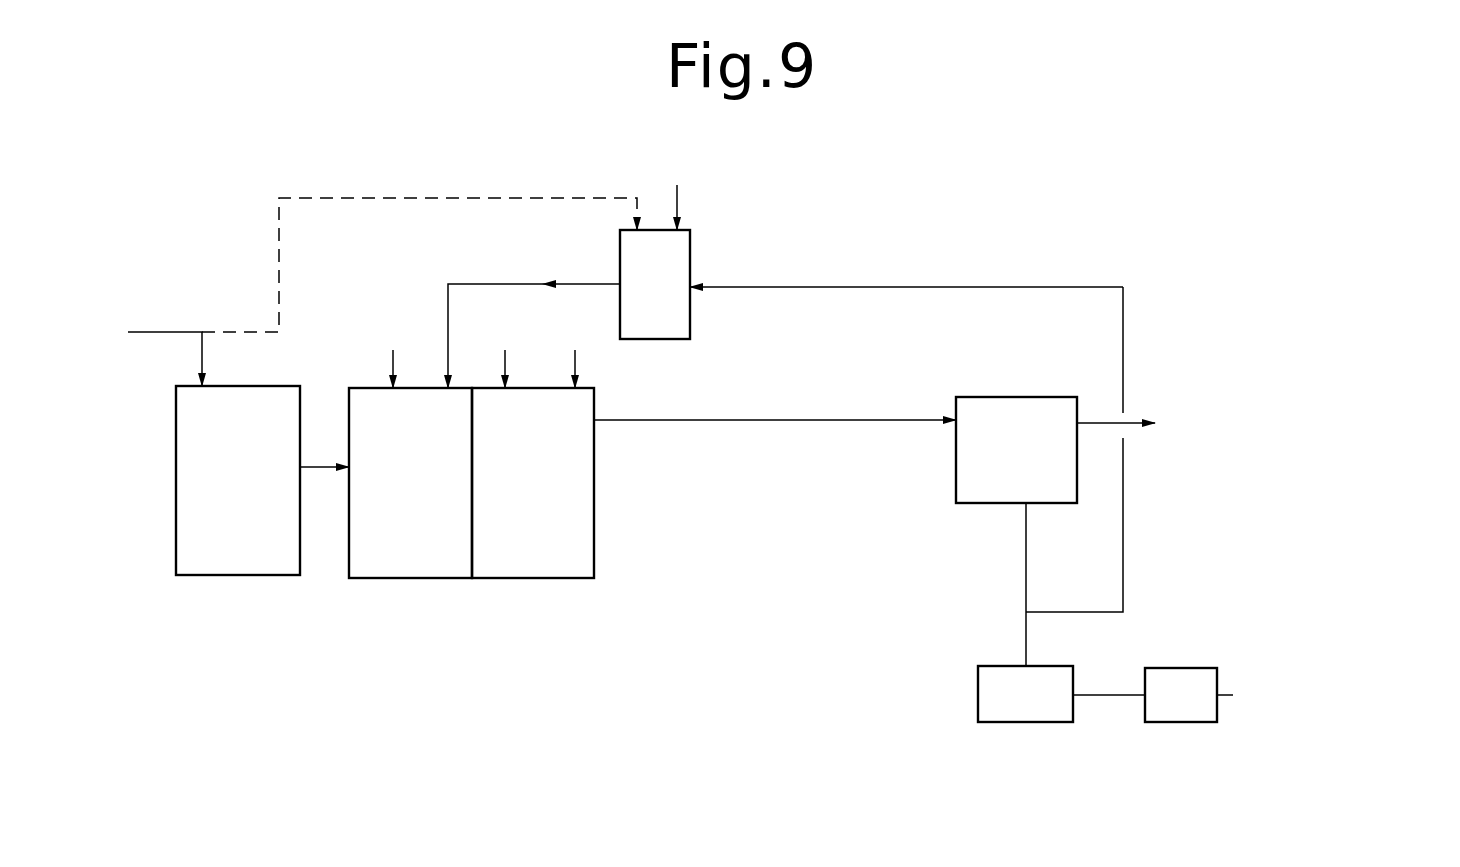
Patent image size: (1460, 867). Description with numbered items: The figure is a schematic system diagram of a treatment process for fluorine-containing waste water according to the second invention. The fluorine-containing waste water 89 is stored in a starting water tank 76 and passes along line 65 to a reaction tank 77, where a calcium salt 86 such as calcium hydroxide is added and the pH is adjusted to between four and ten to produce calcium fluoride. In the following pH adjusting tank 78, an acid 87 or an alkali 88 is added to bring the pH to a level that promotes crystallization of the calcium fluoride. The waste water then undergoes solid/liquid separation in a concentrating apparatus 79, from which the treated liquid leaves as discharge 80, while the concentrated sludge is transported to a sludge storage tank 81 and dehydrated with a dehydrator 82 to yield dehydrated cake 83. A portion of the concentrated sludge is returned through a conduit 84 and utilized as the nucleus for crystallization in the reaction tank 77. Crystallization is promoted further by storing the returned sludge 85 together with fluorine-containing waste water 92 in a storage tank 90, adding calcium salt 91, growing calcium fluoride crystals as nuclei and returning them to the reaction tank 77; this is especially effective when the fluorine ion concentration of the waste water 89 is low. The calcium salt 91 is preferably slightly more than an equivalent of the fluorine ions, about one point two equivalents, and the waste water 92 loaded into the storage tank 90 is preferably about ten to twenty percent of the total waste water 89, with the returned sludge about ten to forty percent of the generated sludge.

The transfer line 65 is at (324, 444).
The starting water tank 76 is at (232, 576).
The reaction tank 77 is at (410, 578).
The pH adjusting tank 78 is at (537, 578).
The concentrating apparatus 79 is at (1017, 397).
The discharge 80 is at (1212, 426).
The sludge storage tank 81 is at (1012, 722).
The dehydrator 82 is at (1175, 722).
The dehydrated cake 83 is at (1325, 712).
The conduit 84 is at (790, 287).
The returned sludge 85 is at (985, 440).
The calcium salt 86 is at (393, 350).
The acid 87 is at (505, 349).
The alkali 88 is at (575, 349).
The fluorine-containing waste water 89 is at (175, 335).
The storage tank 90 is at (690, 320).
The calcium salt 91 is at (677, 187).
The fluorine-containing waste water 92 is at (419, 238).